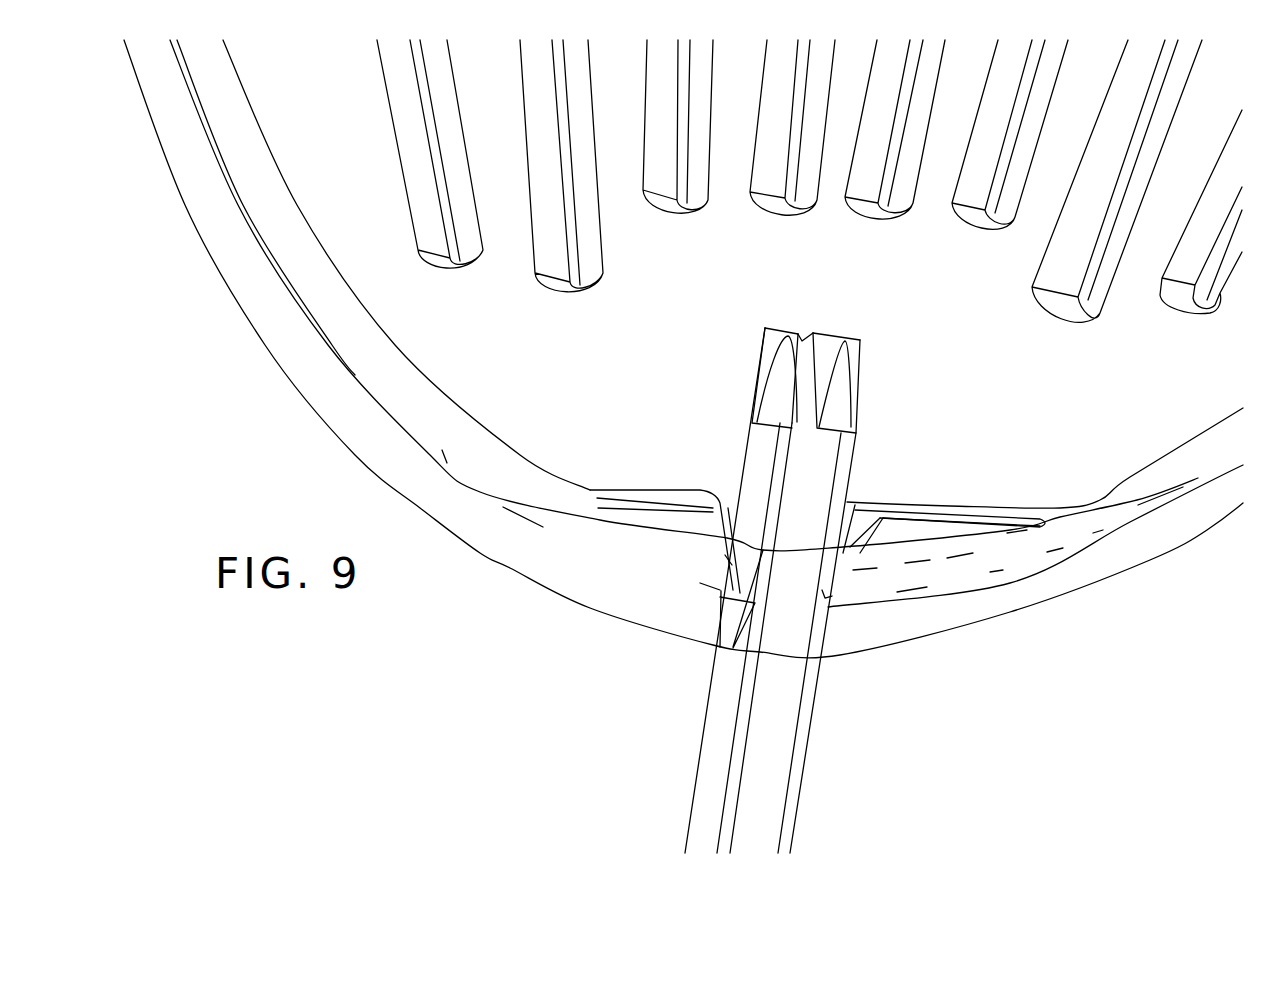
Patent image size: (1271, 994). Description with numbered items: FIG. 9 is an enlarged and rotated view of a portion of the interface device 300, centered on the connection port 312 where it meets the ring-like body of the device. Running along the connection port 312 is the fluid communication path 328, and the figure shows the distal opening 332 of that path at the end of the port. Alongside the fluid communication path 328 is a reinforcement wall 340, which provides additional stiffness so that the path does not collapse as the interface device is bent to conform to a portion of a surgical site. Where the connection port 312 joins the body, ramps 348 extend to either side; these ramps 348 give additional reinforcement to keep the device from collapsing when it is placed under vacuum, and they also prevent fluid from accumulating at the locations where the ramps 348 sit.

The ring 300 is at (1057, 463).
The connection port 312 is at (817, 698).
The fluid communication path 328 is at (762, 763).
The distal opening 332 is at (818, 350).
The reinforcement wall 340 is at (747, 453).
The ramps 348 is at (702, 518).